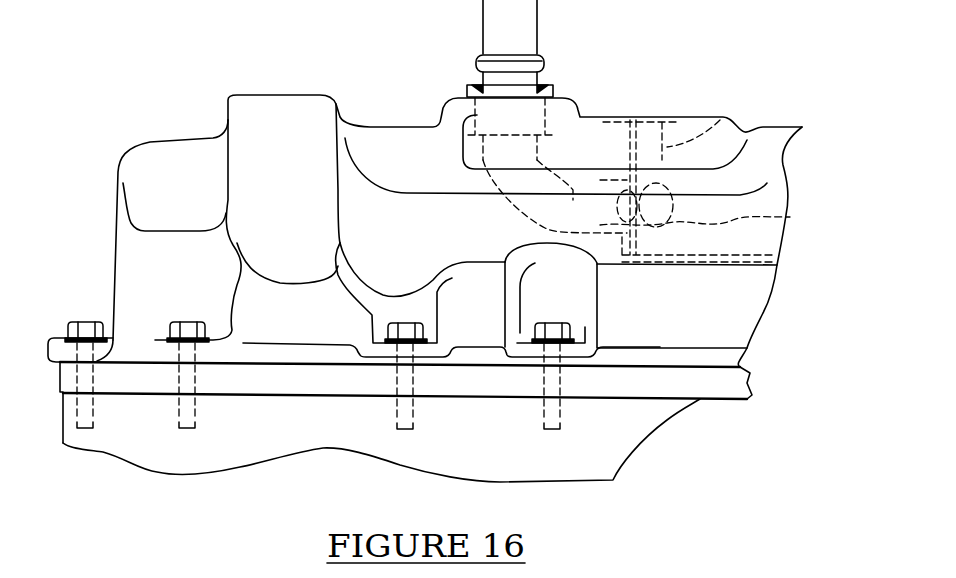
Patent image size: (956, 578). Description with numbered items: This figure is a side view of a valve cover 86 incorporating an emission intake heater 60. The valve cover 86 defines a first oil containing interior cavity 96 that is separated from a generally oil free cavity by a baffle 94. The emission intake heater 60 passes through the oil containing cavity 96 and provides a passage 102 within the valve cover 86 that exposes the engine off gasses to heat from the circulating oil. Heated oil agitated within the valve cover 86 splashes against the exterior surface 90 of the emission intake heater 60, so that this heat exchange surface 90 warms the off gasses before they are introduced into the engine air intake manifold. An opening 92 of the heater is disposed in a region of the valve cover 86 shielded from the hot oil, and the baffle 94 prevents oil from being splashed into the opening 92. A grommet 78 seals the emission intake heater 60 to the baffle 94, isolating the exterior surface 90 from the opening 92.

The emission intake heater 60 is at (552, 52).
The grommet 78 is at (723, 113).
The valve cover 86 is at (650, 130).
The exterior surface 90 is at (512, 205).
The opening 92 is at (790, 217).
The baffle 94 is at (750, 268).
The first oil containing interior cavity 96 is at (675, 265).
The passage 102 is at (527, 157).